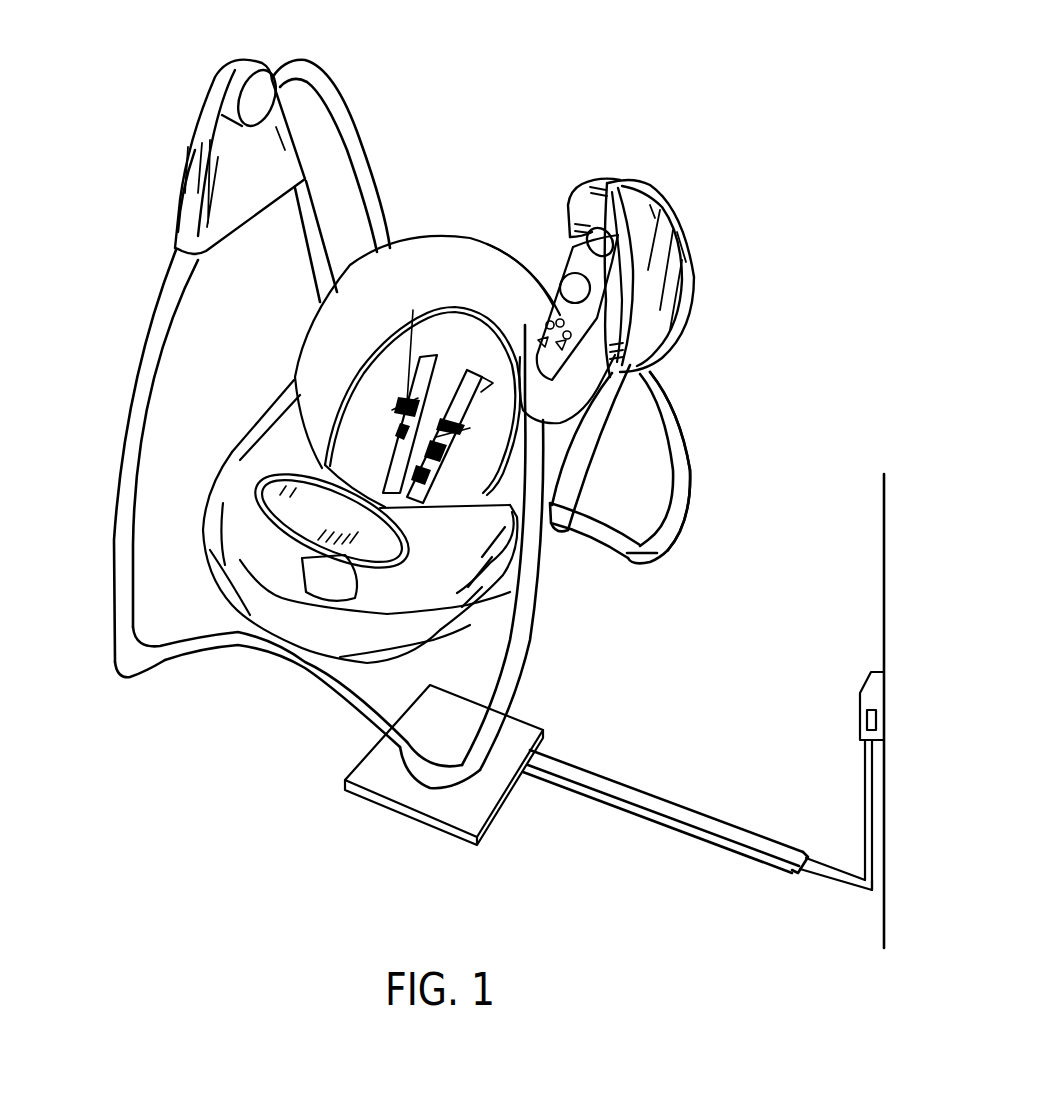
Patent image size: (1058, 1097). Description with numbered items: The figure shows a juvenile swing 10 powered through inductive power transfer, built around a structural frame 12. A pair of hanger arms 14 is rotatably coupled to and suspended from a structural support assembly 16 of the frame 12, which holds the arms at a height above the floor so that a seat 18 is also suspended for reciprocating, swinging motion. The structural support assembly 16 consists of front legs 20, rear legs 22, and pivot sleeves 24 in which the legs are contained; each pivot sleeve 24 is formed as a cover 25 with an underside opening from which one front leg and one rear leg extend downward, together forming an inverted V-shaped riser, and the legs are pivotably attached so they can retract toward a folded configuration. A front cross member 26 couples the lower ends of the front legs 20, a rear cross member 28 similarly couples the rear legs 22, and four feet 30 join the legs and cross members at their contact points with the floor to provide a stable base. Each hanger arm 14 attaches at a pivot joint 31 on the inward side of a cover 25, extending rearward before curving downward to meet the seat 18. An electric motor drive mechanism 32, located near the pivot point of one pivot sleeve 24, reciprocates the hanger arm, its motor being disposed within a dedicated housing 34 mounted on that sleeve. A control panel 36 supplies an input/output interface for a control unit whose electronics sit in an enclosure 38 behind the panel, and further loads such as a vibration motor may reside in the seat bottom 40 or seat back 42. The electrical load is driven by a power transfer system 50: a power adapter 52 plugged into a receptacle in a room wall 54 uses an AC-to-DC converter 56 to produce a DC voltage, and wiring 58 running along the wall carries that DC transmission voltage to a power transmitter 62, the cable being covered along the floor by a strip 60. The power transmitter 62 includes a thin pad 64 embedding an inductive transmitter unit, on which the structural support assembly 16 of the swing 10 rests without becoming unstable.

The swing 10 is at (633, 144).
The structural frame 12 is at (683, 353).
The hanger arms 14 is at (354, 128).
The structural support assembly 16 is at (673, 405).
The seat 18 is at (280, 377).
The front legs 20 is at (132, 436).
The rear legs 22 is at (318, 258).
The pivot sleeves 24 is at (200, 116).
The cover 25 is at (175, 211).
The front cross member 26 is at (227, 640).
The rear cross member 28 is at (603, 537).
The feet 30 is at (115, 651).
The pivot joint 31 is at (236, 73).
The electric motor drive mechanism 32 is at (688, 241).
The housing 34 is at (686, 217).
The control panel 36 is at (550, 303).
The enclosure 38 is at (608, 268).
The seat bottom 40 is at (350, 594).
The seat back 42 is at (440, 337).
The power transfer system 50 is at (630, 847).
The power adapter 52 is at (866, 688).
The room wall 54 is at (883, 545).
The AC-to-DC converter 56 is at (863, 728).
The wiring 58 is at (865, 797).
The strip 60 is at (760, 864).
The power transmitter 62 is at (399, 821).
The pad 64 is at (509, 788).